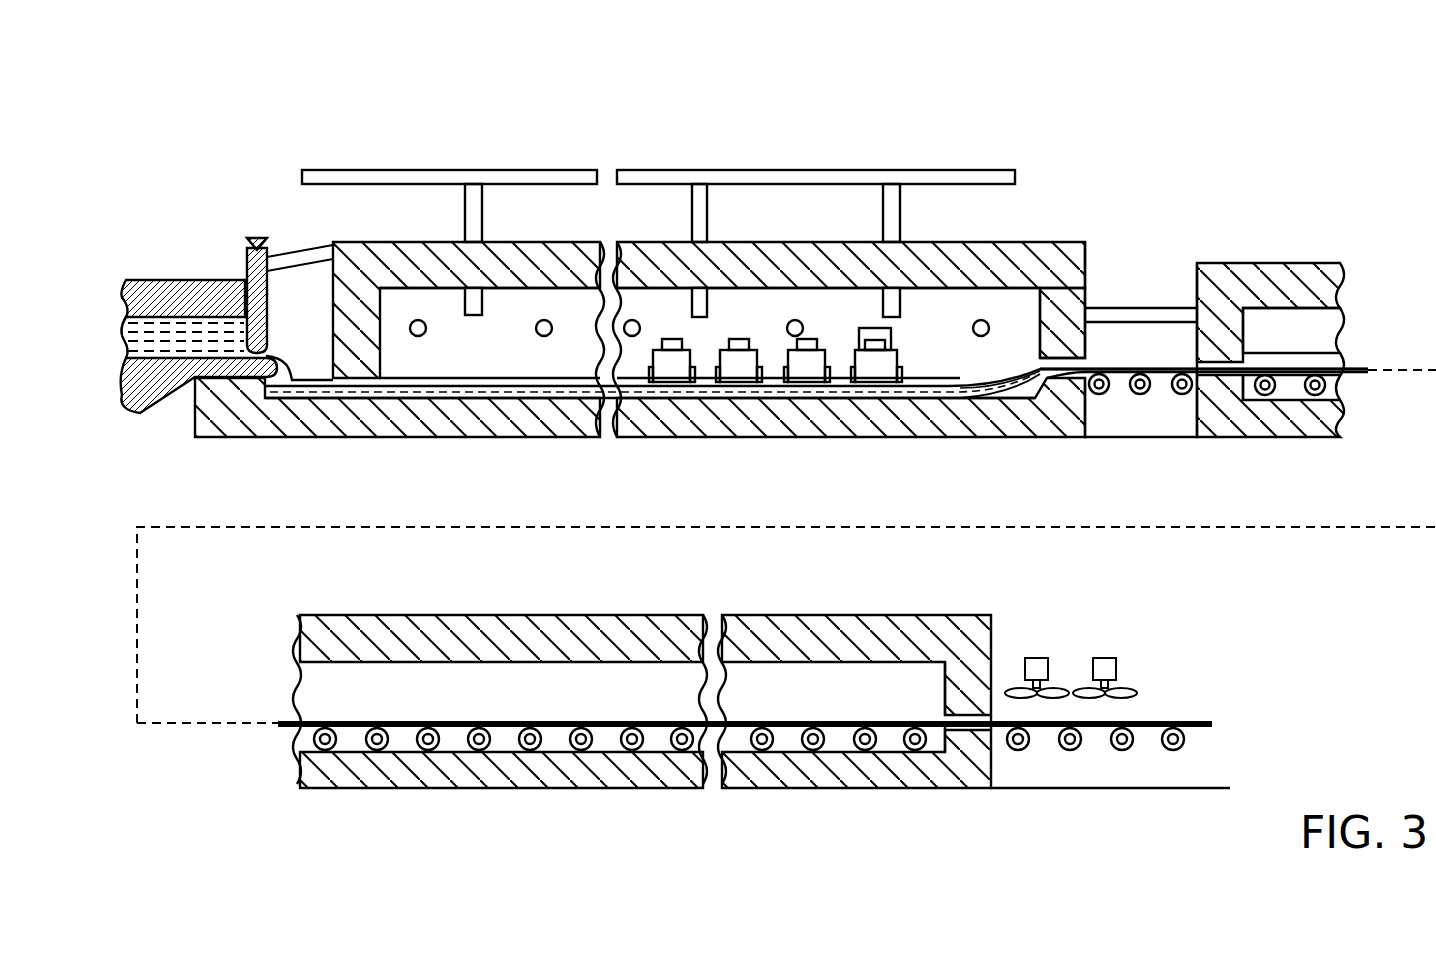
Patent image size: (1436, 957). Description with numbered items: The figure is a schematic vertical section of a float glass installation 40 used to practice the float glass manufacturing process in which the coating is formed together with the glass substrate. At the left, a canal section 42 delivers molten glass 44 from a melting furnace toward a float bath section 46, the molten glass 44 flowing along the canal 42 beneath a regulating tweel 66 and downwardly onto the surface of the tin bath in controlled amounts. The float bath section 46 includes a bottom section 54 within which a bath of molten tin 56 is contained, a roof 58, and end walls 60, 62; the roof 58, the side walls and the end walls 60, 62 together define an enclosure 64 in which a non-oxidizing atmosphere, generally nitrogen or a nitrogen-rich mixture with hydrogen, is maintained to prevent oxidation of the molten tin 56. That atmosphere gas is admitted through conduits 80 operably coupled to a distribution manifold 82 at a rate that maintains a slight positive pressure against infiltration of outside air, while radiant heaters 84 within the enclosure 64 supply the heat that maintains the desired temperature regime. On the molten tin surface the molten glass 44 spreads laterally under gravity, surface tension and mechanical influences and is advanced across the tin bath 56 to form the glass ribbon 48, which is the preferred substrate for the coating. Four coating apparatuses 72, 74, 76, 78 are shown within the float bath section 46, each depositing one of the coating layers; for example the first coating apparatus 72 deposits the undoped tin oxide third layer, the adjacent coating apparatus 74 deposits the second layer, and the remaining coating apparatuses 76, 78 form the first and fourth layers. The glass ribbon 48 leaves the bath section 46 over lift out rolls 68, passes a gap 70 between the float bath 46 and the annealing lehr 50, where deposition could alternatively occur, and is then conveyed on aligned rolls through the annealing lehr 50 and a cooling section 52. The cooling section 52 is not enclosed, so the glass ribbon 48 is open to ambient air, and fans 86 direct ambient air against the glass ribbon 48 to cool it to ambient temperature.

The float glass installation 40 is at (216, 114).
The canal section 42 is at (145, 398).
The molten glass 44 is at (155, 280).
The float bath section 46 is at (507, 242).
The glass ribbon 48 is at (991, 380).
The annealing lehr 50 is at (1259, 262).
The cooling section 52 is at (1118, 676).
The bottom section 54 is at (623, 405).
The molten tin 56 is at (545, 399).
The roof 58 is at (941, 240).
The end wall 60 is at (286, 262).
The end wall 62 is at (1088, 278).
The enclosure 64 is at (457, 360).
The regulating tweel 66 is at (187, 317).
The lift out rolls 68 is at (1099, 396).
The gap 70 is at (1124, 360).
The first coating apparatus 72 is at (670, 364).
The coating apparatus 74 is at (740, 364).
The coating apparatus 76 is at (807, 364).
The coating apparatus 78 is at (875, 364).
The conduits 80 is at (484, 304).
The distribution manifold 82 is at (777, 170).
The radiant heaters 84 is at (544, 320).
The fans 86 is at (1056, 690).